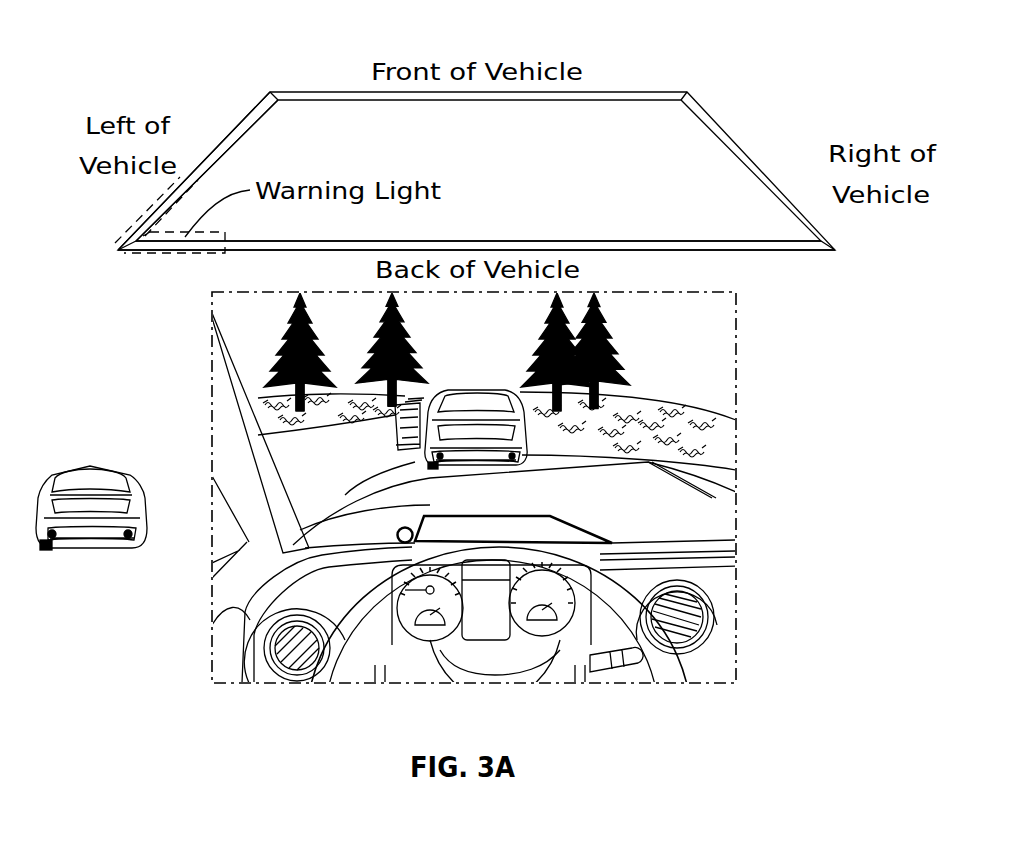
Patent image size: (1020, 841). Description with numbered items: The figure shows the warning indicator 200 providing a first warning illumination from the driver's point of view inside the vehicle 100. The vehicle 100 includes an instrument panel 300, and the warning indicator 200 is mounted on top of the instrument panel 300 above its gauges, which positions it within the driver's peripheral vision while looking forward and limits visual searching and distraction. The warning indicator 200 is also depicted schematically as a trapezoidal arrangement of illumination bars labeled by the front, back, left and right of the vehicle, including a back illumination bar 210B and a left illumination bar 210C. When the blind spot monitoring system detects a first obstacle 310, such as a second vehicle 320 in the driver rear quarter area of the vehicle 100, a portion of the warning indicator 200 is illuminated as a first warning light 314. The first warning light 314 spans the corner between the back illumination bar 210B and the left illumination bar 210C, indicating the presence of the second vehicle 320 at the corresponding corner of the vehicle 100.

The vehicle 100 is at (518, 566).
The warning indicator 200 is at (636, 92).
The back illumination bar 210B is at (626, 241).
The left illumination bar 210C is at (262, 100).
The instrument panel 300 is at (490, 620).
The first obstacle 310 is at (82, 536).
The second vehicle 320 is at (88, 552).
The first warning light 314 is at (137, 258).